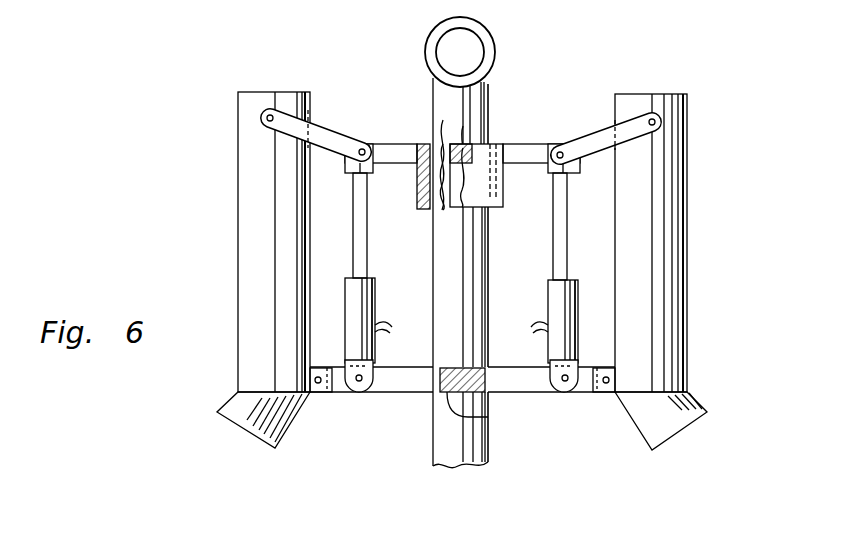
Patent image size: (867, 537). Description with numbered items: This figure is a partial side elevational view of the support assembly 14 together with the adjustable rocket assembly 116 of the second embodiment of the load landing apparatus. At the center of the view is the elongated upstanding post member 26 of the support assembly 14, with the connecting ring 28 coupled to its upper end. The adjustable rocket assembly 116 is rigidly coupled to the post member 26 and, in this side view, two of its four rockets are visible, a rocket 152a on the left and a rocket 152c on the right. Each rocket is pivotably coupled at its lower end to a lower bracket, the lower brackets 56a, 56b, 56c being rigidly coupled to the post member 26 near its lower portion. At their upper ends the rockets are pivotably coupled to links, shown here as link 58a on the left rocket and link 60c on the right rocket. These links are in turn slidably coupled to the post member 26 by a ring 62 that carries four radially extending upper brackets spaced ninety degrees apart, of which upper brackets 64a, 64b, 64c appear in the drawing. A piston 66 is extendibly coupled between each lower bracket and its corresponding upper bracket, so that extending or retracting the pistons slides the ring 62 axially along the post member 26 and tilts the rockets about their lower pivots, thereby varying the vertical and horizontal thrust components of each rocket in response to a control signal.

The support assembly 14 is at (497, 110).
The post member 26 is at (434, 126).
The connecting ring 28 is at (490, 40).
The lower bracket 56a is at (392, 392).
The lower bracket 56b is at (452, 400).
The lower bracket 56c is at (578, 393).
The link 58a is at (322, 118).
The link 60c is at (600, 145).
The ring 62 is at (504, 205).
The upper bracket 64a is at (382, 143).
The upper bracket 64b is at (441, 200).
The upper bracket 64c is at (524, 144).
The piston 66 is at (376, 288).
The adjustable rocket assembly 116 is at (223, 150).
The rocket 152a is at (238, 222).
The rocket 152c is at (687, 222).